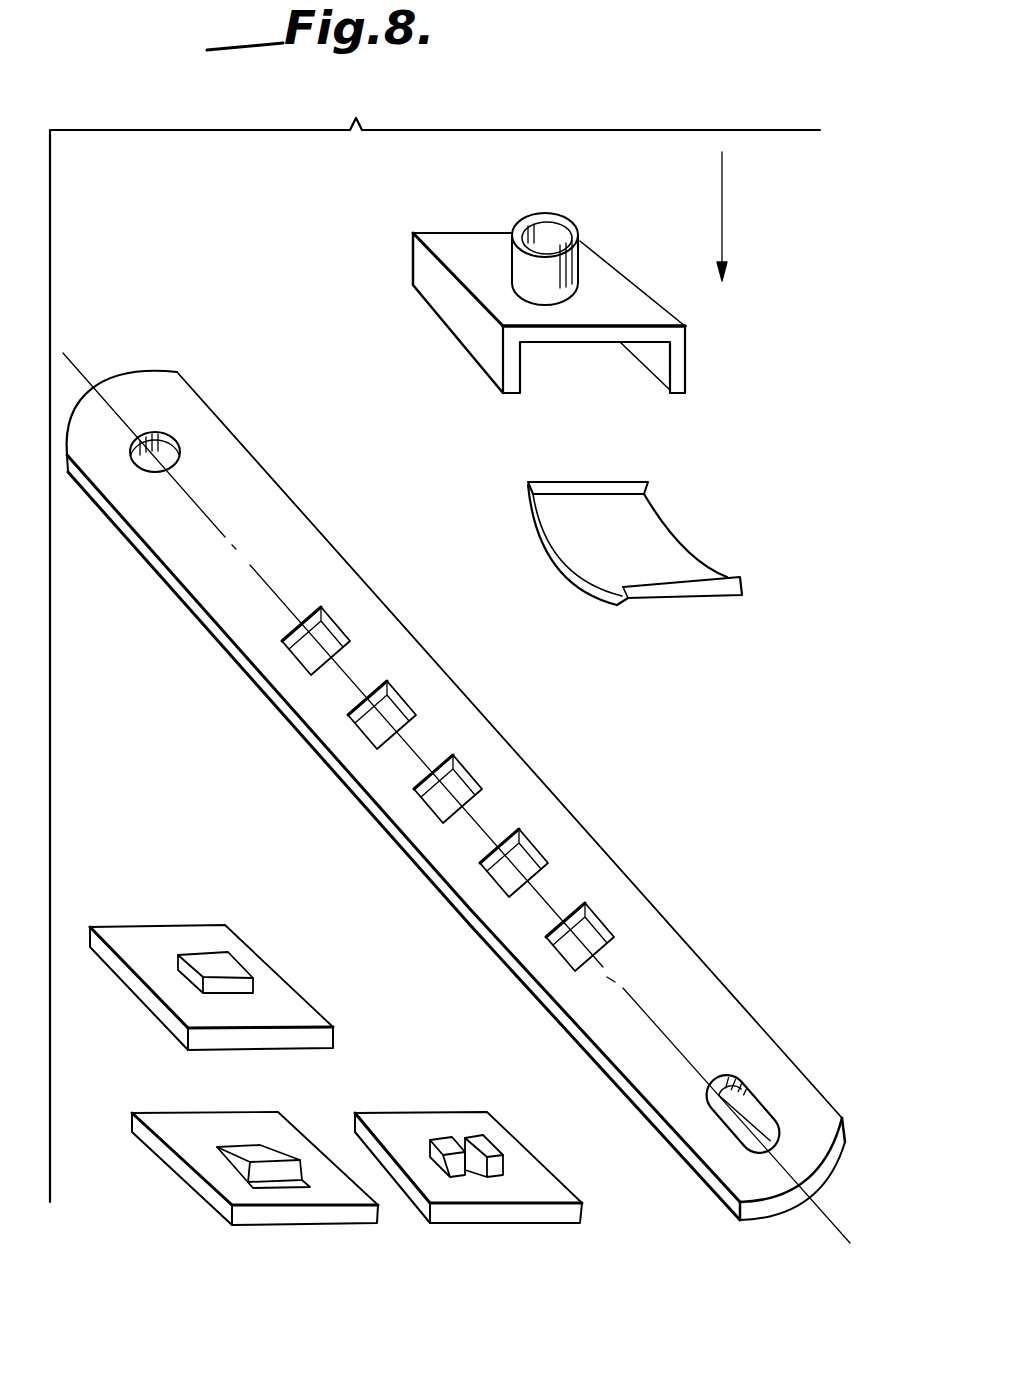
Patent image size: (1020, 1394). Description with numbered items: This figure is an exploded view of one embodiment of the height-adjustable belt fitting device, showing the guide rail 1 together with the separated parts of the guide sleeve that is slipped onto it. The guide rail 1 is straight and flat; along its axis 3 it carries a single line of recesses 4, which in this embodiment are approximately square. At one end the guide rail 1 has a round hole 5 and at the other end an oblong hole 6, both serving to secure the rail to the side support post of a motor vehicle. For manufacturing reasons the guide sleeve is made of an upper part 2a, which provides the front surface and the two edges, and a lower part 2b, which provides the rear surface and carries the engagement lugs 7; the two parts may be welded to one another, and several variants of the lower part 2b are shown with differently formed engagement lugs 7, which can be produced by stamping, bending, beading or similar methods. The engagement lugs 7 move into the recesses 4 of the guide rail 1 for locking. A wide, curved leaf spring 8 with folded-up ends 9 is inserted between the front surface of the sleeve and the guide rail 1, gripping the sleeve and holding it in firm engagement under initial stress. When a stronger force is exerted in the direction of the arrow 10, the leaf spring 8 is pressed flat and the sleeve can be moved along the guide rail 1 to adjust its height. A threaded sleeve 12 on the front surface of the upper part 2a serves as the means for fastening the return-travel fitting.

The guide rail 1 is at (656, 912).
The upper part 2a is at (472, 337).
The lower part 2b is at (160, 942).
The axis 3 is at (203, 505).
The recesses 4 is at (305, 662).
The round hole 5 is at (165, 440).
The oblong hole 6 is at (733, 1120).
The engagement lugs 7 is at (227, 968).
The leaf spring 8 is at (570, 532).
The folded-up ends 9 is at (725, 578).
The arrow 10 is at (722, 232).
The threaded sleeve 12 is at (581, 252).